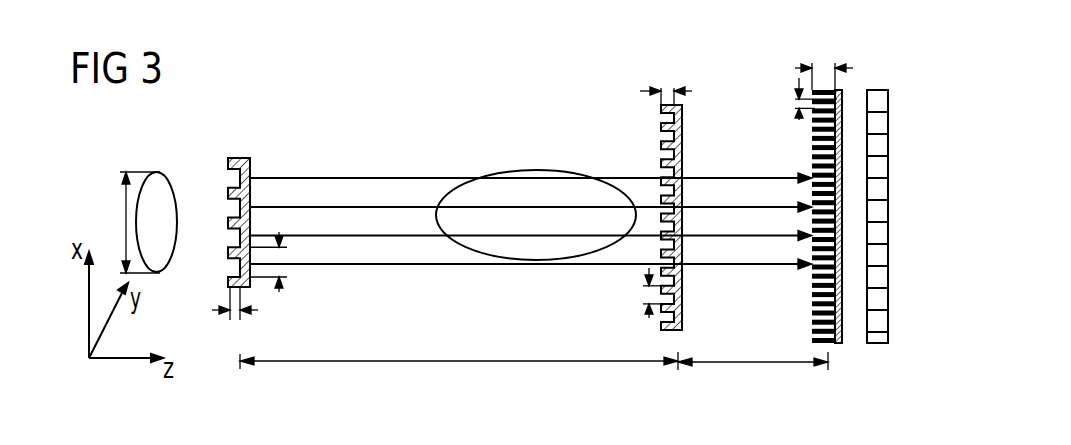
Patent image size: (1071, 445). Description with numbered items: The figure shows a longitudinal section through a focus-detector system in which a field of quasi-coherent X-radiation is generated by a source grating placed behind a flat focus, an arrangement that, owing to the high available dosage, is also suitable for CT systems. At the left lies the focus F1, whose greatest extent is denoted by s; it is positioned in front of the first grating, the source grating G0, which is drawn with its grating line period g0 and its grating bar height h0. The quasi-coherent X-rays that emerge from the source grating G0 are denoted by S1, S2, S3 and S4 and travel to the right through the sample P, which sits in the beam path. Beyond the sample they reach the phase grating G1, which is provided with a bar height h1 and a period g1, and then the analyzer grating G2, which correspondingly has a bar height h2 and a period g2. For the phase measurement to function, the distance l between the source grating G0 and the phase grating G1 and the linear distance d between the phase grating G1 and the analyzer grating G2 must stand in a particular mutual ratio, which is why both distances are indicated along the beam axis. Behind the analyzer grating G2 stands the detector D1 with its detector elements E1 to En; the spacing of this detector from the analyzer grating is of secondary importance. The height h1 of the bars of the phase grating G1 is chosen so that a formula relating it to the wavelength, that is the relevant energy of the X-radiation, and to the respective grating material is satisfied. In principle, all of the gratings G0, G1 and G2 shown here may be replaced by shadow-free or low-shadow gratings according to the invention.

The focus F1 is at (163, 172).
The greatest extent of the focus s is at (124, 219).
The source grating G0 is at (252, 159).
The height of the grating bars of the source grating h0 is at (233, 318).
The period of the grating lines of the source grating g0 is at (288, 272).
The X-ray S1 is at (352, 177).
The X-ray S2 is at (408, 206).
The X-ray S3 is at (380, 237).
The X-ray S4 is at (428, 265).
The sample P is at (535, 170).
The phase grating G1 is at (683, 147).
The height of the grating bars of the phase grating h1 is at (667, 88).
The period of the grating lines of the phase grating g1 is at (645, 293).
The distance l is at (502, 343).
The distance d is at (756, 362).
The analyzer grating G2 is at (837, 345).
The height of the grating bars of the analyzer grating h2 is at (822, 63).
The period of the grating lines of the analyzer grating g2 is at (795, 99).
The detector D1 is at (888, 76).
The detector element E1 is at (877, 98).
The detector element En is at (877, 337).